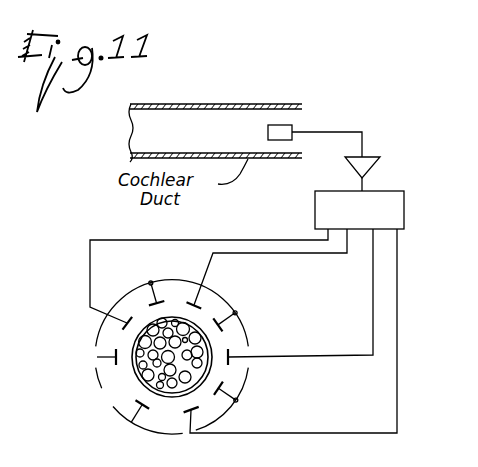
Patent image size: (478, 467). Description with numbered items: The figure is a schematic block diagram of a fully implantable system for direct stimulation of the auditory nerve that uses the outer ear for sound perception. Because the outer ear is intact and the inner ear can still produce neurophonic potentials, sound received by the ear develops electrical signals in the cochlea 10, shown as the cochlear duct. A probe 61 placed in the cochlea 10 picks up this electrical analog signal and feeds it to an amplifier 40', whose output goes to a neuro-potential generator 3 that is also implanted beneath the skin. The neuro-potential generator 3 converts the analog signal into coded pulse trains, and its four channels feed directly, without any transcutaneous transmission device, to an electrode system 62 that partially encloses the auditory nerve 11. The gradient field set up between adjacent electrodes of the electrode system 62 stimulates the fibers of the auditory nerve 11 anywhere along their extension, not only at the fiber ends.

The cochlea 10 is at (253, 106).
The probe 61 is at (292, 125).
The amplifier 40' is at (383, 156).
The neuro-potential generator 3 is at (404, 208).
The electrode system 62 is at (256, 392).
The auditory nerve 11 is at (140, 367).